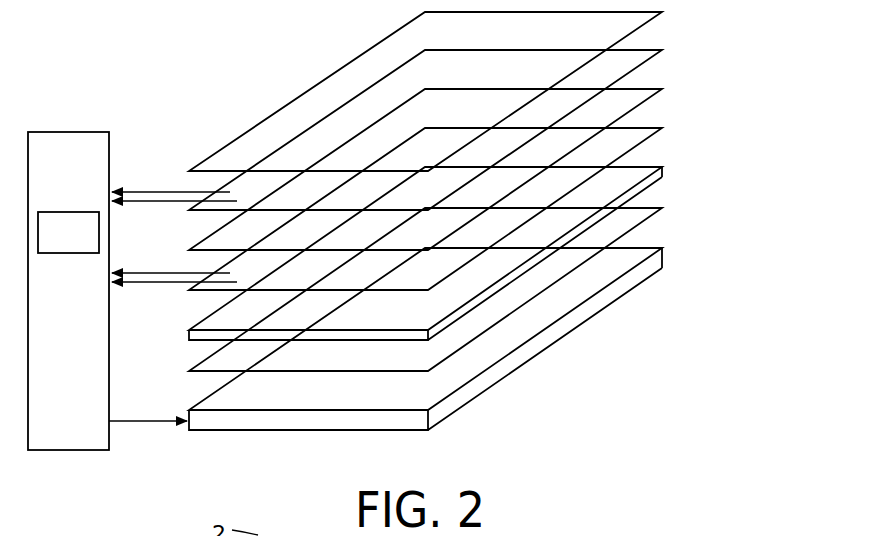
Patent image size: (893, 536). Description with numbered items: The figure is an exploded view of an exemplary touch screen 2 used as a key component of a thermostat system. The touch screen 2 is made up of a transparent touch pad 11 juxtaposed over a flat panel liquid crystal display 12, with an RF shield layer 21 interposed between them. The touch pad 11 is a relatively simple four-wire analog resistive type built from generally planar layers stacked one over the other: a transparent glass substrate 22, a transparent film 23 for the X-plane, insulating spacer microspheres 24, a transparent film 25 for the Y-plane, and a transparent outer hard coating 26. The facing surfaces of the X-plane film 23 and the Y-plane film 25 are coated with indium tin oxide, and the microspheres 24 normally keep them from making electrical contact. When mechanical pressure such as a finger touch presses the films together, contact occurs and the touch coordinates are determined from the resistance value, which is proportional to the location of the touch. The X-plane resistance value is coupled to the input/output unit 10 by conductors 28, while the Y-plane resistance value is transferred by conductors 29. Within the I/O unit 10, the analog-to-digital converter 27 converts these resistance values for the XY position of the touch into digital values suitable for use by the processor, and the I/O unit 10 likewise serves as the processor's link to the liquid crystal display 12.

The touch screen 2 is at (278, 74).
The input/output unit 10 is at (108, 313).
The touch pad 11 is at (733, 13).
The liquid crystal display 12 is at (557, 328).
The RF shield layer 21 is at (663, 209).
The transparent glass substrate 22 is at (652, 180).
The transparent film for the X-plane 23 is at (663, 129).
The insulating spacer microspheres 24 is at (663, 90).
The transparent film for the Y-plane 25 is at (663, 51).
The transparent outer hard coating 26 is at (663, 13).
The analog-to-digital converter 27 is at (99, 226).
The conductors 28 is at (160, 272).
The conductors 29 is at (160, 200).